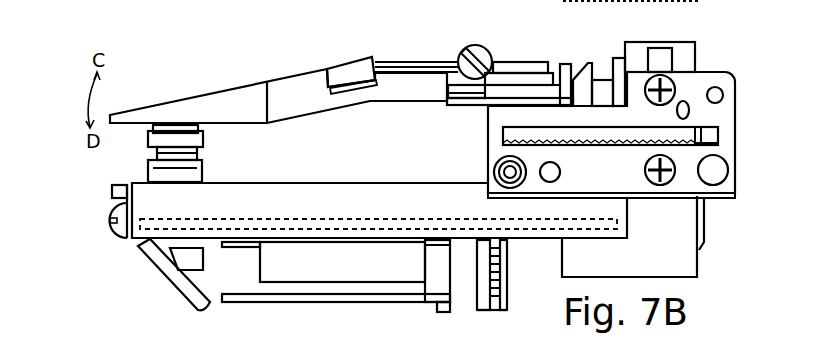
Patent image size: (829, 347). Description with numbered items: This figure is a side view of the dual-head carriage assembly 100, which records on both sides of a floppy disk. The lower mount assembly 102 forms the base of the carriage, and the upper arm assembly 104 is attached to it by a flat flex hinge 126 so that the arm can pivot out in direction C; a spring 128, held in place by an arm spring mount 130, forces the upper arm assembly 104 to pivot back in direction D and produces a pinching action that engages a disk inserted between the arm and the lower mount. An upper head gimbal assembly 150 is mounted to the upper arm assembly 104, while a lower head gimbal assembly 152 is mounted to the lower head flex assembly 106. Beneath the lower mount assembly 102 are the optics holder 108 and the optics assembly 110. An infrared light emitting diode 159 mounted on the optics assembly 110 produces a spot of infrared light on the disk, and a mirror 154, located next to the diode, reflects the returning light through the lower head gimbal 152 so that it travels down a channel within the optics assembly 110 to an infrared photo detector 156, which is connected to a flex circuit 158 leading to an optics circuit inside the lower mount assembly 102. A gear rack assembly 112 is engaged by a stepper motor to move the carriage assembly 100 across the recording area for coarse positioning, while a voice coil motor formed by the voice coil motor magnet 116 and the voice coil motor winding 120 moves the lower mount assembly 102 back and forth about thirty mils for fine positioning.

The dual-head carriage assembly 100 is at (70, 33).
The lower mount assembly 102 is at (318, 210).
The upper arm assembly 104 is at (253, 117).
The lower head flex assembly 106 is at (435, 215).
The optics holder 108 is at (344, 272).
The optics assembly 110 is at (249, 282).
The gear rack assembly 112 is at (730, 113).
The voice coil motor magnet 116 is at (705, 232).
The voice coil motor winding 120 is at (601, 78).
The flat flex hinge 126 is at (466, 104).
The spring 128 is at (492, 48).
The arm spring mount 130 is at (518, 62).
The upper head gimbal assembly 150 is at (203, 138).
The lower head gimbal assembly 152 is at (203, 170).
The mirror 154 is at (168, 277).
The infrared photo detector 156 is at (473, 312).
The flex circuit 158 is at (508, 284).
The infrared light emitting diode 159 is at (181, 262).